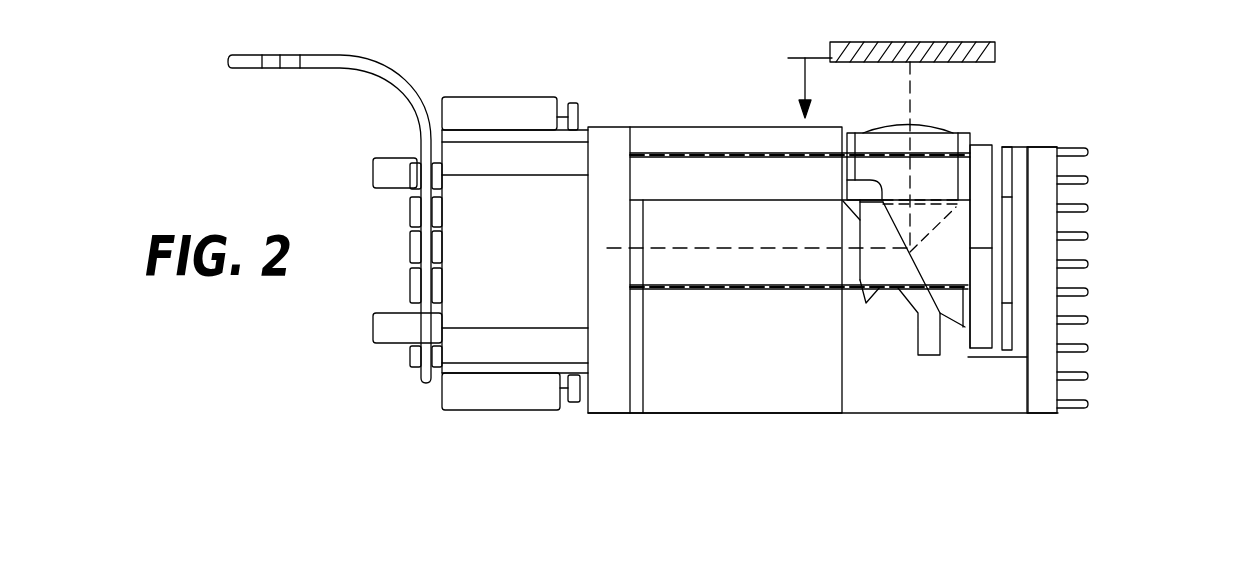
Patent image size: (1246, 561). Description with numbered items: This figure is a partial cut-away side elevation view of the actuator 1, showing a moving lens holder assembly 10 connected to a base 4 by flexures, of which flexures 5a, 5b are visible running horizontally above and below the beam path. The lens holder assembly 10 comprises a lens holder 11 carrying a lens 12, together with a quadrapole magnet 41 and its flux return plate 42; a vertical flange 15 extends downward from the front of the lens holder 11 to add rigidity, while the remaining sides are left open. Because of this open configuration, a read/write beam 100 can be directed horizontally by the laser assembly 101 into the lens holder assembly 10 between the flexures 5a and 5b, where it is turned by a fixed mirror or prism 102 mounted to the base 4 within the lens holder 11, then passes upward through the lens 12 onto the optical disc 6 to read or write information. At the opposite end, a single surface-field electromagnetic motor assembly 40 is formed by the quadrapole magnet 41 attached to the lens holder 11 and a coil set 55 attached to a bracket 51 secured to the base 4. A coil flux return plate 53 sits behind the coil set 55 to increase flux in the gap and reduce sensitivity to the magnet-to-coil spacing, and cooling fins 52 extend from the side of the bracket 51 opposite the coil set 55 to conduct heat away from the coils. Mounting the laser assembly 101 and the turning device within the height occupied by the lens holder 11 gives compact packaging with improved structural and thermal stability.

The actuator 1 is at (1170, 0).
The base 4 is at (619, 394).
The flexure 5a is at (693, 152).
The flexure 5b is at (720, 288).
The optical disc 6 is at (988, 44).
The lens holder assembly 10 is at (947, 189).
The lens holder 11 is at (855, 140).
The lens 12 is at (890, 128).
The vertical flange 15 is at (934, 353).
The electromagnetic motor assembly 40 is at (1007, 136).
The quadrapole magnet 41 is at (982, 346).
The flux return plate 42 is at (962, 330).
The bracket 51 is at (1045, 417).
The cooling fins 52 is at (1088, 151).
The coil flux return plate 53 is at (1022, 305).
The coil set 55 is at (1008, 351).
The read/write beam 100 is at (911, 87).
The laser assembly 101 is at (503, 314).
The fixed mirror or prism 102 is at (875, 274).